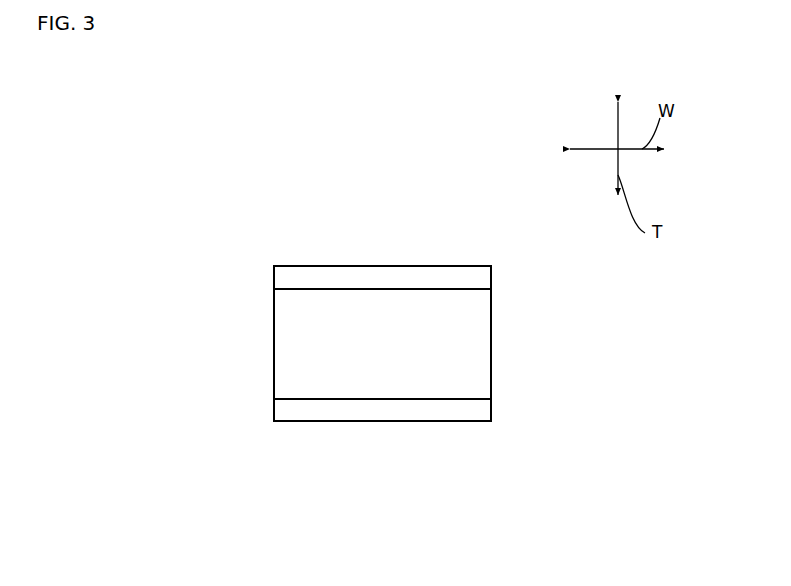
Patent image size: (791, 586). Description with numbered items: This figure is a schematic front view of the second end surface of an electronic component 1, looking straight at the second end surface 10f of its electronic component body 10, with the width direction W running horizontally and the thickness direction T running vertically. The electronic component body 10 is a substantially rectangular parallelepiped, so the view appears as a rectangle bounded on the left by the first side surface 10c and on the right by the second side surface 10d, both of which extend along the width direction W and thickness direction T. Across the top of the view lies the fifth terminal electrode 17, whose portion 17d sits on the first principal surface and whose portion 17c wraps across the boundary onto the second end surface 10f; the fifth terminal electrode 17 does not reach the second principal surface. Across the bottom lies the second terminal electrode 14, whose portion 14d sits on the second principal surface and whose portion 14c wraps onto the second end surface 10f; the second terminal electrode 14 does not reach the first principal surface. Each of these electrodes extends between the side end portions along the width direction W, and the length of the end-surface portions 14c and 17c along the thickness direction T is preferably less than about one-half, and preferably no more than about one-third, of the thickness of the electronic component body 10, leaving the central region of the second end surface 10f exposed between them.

The electronic component 1 is at (446, 246).
The electronic component body 10 is at (495, 333).
The first side surface 10c is at (273, 372).
The second side surface 10d is at (493, 373).
The second end surface 10f is at (293, 312).
The second terminal electrode 14 is at (452, 424).
The portion of the second terminal electrode on the second end surface 14c is at (418, 412).
The portion of the second terminal electrode on the second principal surface 14d is at (335, 422).
The fifth terminal electrode 17 is at (317, 263).
The portion of the fifth terminal electrode on the second end surface 17c is at (398, 277).
The portion of the fifth terminal electrode on the first principal surface 17d is at (360, 266).